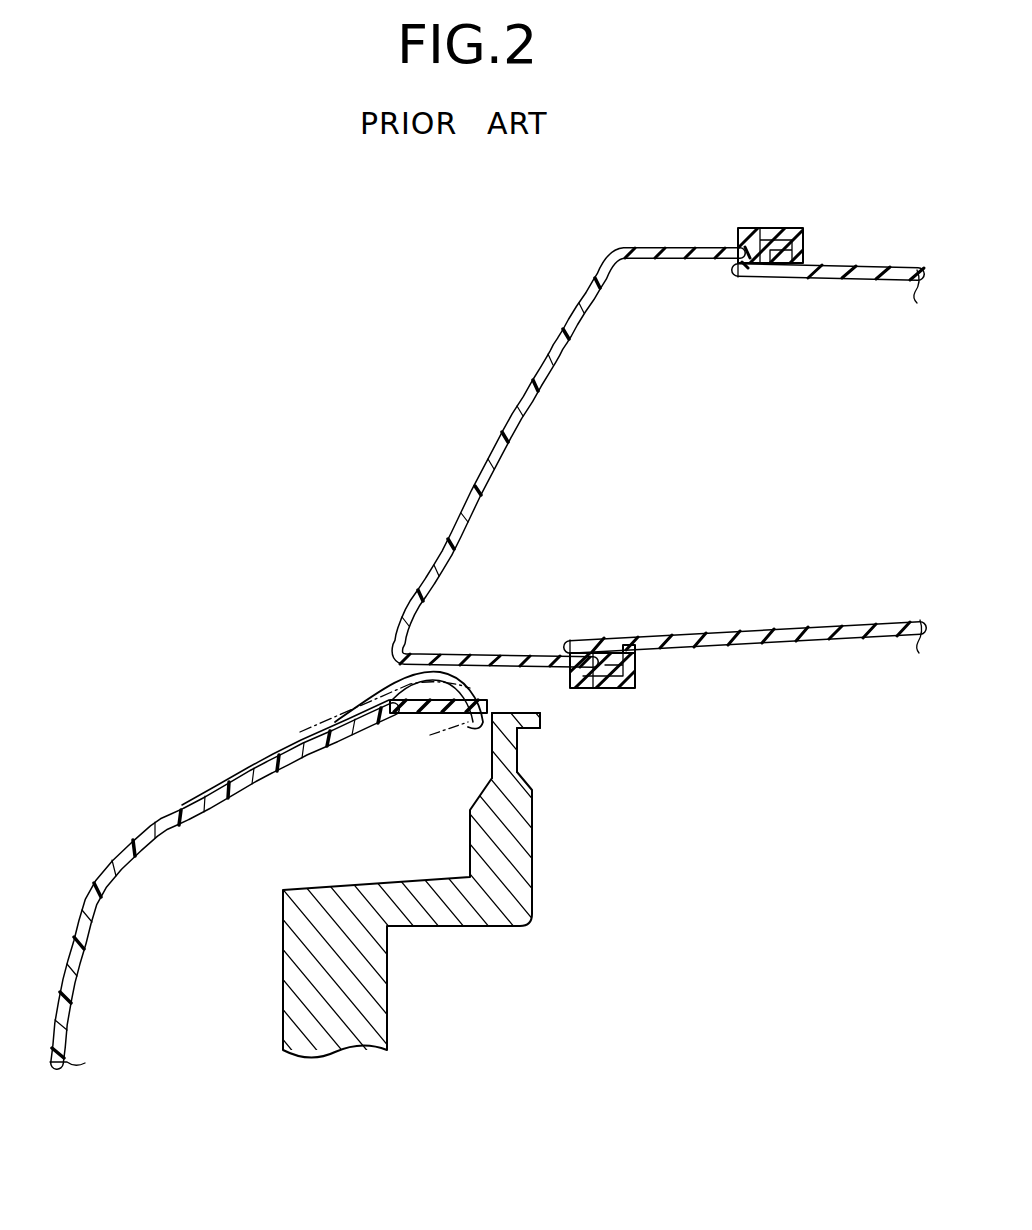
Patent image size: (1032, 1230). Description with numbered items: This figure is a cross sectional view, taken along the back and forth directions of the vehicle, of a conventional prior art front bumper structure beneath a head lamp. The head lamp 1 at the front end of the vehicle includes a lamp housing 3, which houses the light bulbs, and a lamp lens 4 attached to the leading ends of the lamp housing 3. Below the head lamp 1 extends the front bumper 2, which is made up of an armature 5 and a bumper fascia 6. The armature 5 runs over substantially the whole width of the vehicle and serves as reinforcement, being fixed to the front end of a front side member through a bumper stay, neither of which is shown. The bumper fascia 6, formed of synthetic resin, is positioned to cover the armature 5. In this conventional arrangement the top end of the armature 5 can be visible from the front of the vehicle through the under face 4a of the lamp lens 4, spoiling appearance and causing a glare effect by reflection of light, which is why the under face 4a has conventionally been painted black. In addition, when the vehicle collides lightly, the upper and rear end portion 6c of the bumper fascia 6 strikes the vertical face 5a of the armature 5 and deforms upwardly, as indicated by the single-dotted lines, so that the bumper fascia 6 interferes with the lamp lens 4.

The head lamp 1 is at (568, 457).
The front bumper 2 is at (184, 810).
The lamp housing 3 is at (716, 636).
The lamp lens 4 is at (573, 340).
The under face 4a is at (493, 654).
The armature 5 is at (425, 880).
The vertical face 5a is at (489, 742).
The bumper fascia 6 is at (290, 748).
The upper and rear end portion 6c is at (452, 730).